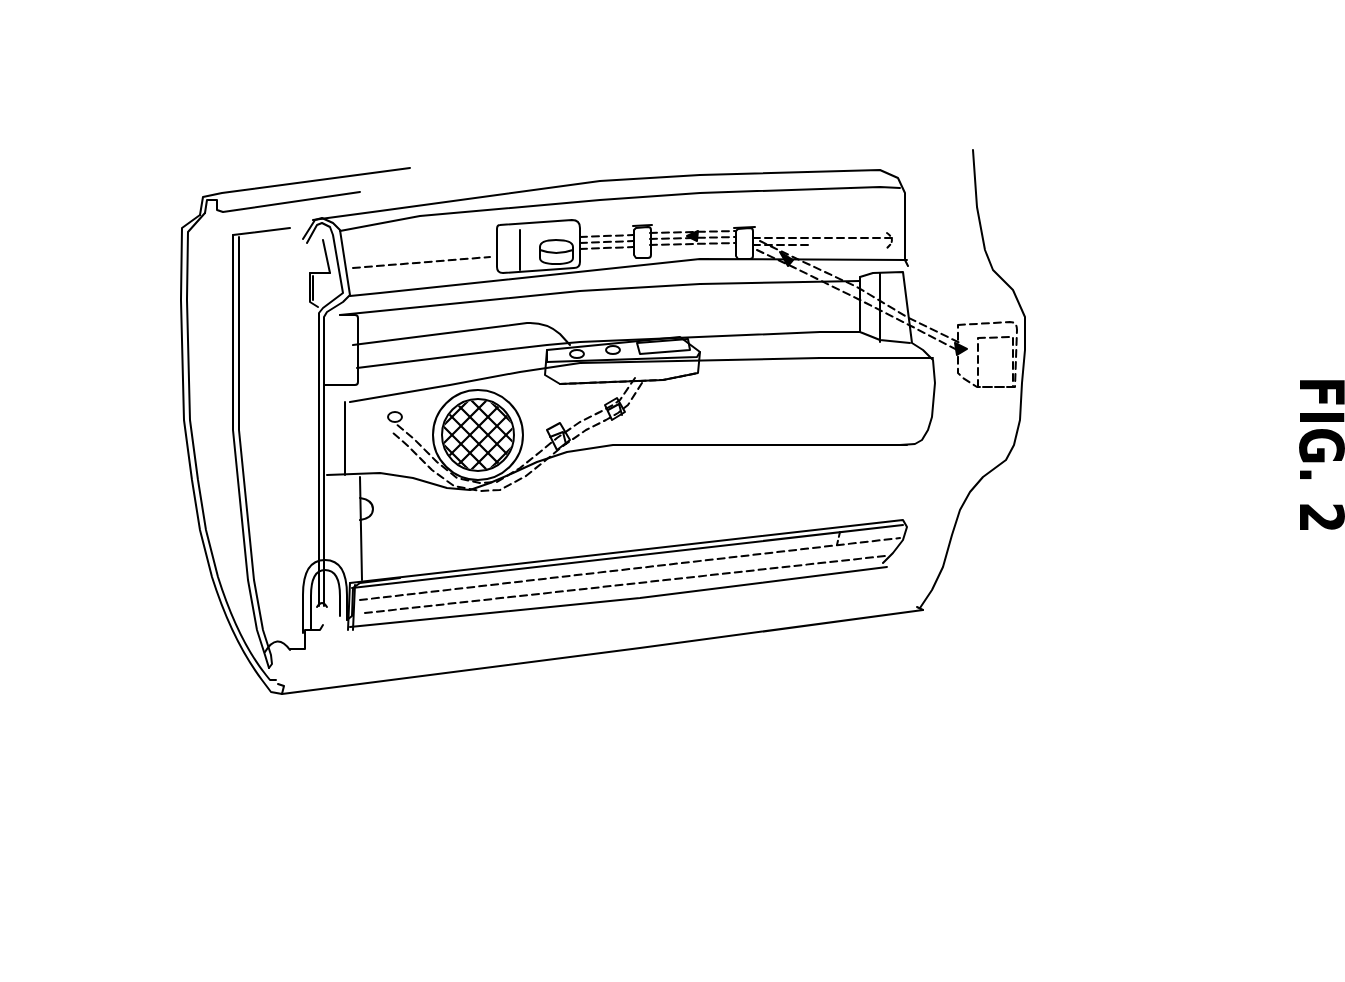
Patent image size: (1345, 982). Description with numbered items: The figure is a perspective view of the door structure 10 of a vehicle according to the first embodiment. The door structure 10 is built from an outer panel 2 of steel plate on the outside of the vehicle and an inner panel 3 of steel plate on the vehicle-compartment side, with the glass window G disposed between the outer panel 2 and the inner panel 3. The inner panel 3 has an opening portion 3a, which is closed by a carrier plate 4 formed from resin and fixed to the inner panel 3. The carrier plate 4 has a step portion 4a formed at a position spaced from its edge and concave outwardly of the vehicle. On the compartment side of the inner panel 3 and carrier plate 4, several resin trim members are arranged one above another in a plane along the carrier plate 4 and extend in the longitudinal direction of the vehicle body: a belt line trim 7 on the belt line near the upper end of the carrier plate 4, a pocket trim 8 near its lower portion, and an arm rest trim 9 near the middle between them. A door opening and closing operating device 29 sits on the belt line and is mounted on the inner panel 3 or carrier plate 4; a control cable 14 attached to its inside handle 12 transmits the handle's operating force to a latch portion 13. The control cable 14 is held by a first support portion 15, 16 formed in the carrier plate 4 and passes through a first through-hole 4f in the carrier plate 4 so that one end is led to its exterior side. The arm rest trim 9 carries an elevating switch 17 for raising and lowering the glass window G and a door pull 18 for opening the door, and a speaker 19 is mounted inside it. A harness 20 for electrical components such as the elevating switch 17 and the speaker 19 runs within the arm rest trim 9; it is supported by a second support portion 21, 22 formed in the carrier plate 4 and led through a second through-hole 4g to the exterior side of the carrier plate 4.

The outer panel 2 is at (200, 528).
The glass window G is at (230, 295).
The inner panel 3 is at (275, 638).
The opening portion 3a is at (348, 629).
The carrier plate 4 is at (323, 620).
The step portion 4a is at (370, 505).
The first through-hole 4f is at (760, 236).
The second through-hole 4g is at (393, 424).
The belt line trim 7 is at (908, 228).
The pocket trim 8 is at (898, 558).
The arm rest trim 9 is at (928, 430).
The door structure 10 is at (838, 625).
The inside handle 12 is at (553, 228).
The latch portion 13 is at (1007, 350).
The control cable 14 is at (695, 236).
The first support portion 15 is at (643, 225).
The first support portion 16 is at (755, 231).
The elevating switch 17 is at (410, 347).
The door pull 18 is at (677, 342).
The speaker 19 is at (490, 478).
The harness 20 is at (553, 450).
The second support portion 21 is at (577, 452).
The second support portion 22 is at (615, 422).
The door opening and closing operating device 29 is at (520, 216).